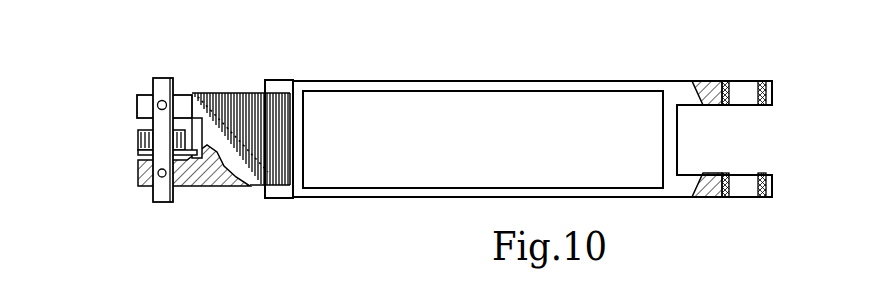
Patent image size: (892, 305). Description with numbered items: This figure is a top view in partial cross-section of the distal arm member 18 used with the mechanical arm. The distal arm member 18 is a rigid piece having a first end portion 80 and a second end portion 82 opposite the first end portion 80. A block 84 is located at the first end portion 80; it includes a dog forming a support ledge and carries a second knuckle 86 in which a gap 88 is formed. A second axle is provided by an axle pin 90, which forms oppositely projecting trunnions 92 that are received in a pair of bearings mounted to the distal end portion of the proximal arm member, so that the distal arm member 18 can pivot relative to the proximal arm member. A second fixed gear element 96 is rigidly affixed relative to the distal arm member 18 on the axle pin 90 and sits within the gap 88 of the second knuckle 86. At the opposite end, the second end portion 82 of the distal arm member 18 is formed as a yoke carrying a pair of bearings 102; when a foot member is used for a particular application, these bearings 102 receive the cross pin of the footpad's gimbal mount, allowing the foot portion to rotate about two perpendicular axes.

The distal arm member 18 is at (428, 57).
The first end portion 80 is at (240, 72).
The second end portion 82 is at (721, 64).
The block 84 is at (255, 173).
The second knuckle 86 is at (128, 102).
The gap 88 is at (193, 123).
The axle pin 90 is at (157, 160).
The trunnions 92 is at (152, 82).
The second fixed gear element 96 is at (137, 138).
The bearings 102 is at (768, 80).